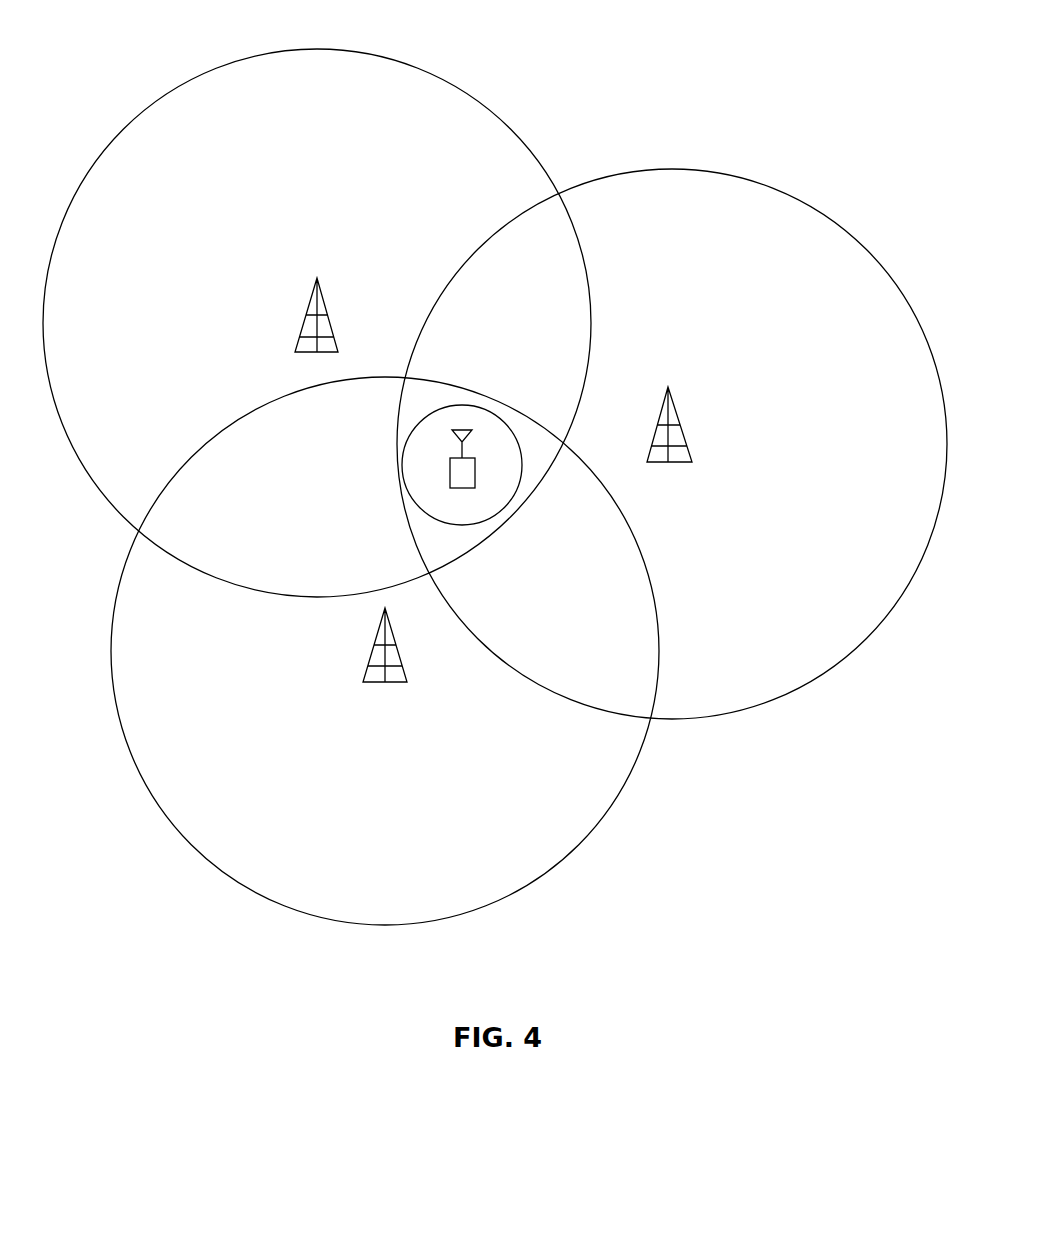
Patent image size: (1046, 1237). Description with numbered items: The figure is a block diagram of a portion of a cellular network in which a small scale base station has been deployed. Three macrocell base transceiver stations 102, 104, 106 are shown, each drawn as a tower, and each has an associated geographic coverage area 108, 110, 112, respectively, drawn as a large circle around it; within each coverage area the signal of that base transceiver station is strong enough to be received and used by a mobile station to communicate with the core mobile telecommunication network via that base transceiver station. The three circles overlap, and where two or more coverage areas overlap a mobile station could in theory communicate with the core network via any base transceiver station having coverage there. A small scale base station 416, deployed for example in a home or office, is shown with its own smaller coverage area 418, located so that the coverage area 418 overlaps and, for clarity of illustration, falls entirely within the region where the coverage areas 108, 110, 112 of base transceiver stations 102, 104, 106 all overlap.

The macrocell base transceiver station 102 is at (305, 314).
The macrocell base transceiver station 104 is at (681, 421).
The macrocell base transceiver station 106 is at (385, 686).
The geographic coverage area 108 is at (420, 69).
The geographic coverage area 110 is at (793, 200).
The geographic coverage area 112 is at (388, 926).
The small scale base station 416 is at (475, 470).
The coverage area 418 is at (462, 525).